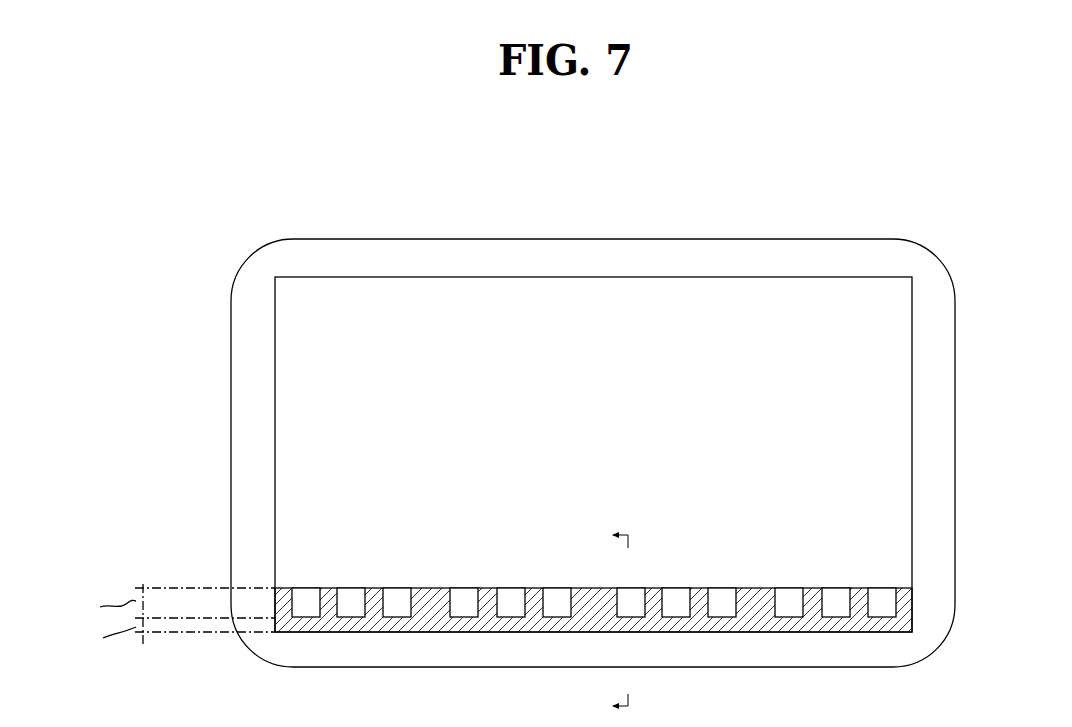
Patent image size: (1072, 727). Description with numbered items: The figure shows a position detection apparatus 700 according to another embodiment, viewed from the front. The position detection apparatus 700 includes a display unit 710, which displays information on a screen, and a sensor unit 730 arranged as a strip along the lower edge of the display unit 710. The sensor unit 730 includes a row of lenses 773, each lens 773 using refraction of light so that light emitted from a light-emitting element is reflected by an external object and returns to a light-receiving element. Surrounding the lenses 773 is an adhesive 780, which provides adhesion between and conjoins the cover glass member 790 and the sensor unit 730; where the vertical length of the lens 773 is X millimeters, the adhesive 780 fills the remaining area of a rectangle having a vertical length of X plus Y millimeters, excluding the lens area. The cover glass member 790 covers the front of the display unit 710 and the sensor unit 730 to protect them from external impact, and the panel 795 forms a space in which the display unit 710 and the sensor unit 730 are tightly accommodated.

The position detection apparatus 700 is at (602, 228).
The display unit 710 is at (275, 369).
The sensor unit 730 is at (535, 636).
The lens 773 is at (305, 608).
The adhesive 780 is at (430, 622).
The cover glass member 790 is at (892, 387).
The panel 795 is at (493, 653).